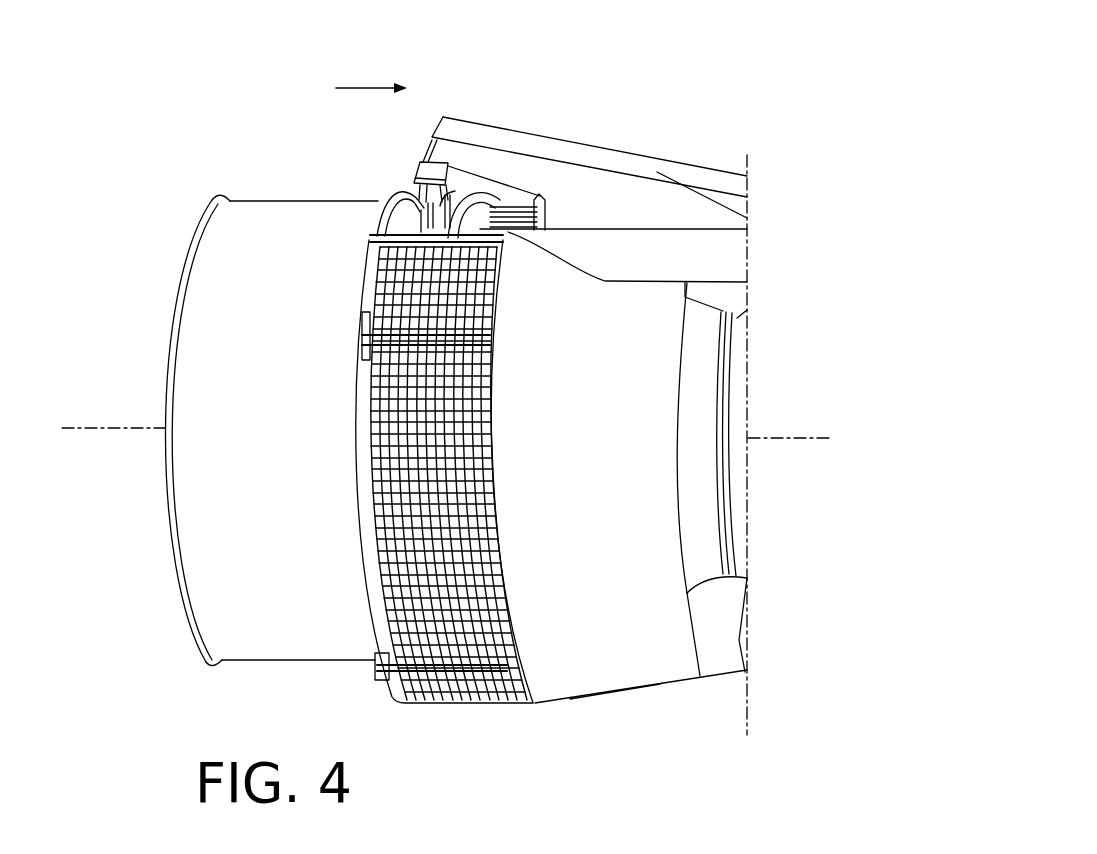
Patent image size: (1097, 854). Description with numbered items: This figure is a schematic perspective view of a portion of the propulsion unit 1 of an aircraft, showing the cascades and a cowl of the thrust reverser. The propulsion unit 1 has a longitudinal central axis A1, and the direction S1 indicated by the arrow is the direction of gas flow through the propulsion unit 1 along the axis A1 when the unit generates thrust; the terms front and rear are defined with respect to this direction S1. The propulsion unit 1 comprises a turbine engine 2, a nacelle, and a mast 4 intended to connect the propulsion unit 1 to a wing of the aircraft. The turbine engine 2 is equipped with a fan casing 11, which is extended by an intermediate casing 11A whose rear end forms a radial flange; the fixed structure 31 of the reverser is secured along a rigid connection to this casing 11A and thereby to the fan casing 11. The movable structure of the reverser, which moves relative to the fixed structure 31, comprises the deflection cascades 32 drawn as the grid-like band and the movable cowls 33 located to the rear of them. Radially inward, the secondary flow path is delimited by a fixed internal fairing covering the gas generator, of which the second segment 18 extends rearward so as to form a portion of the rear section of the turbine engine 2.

The propulsion unit 1 is at (683, 63).
The turbine engine 2 is at (160, 634).
The mast 4 is at (617, 173).
The fan casing 11 is at (265, 222).
The intermediate casing 11A is at (476, 215).
The second segment of the fixed internal fairing 18 is at (692, 548).
The fixed structure 31 is at (524, 188).
The deflection cascades 32 is at (458, 703).
The movable cowls 33 is at (603, 648).
The longitudinal central axis A1 is at (103, 428).
The direction of gas flow S1 is at (370, 88).